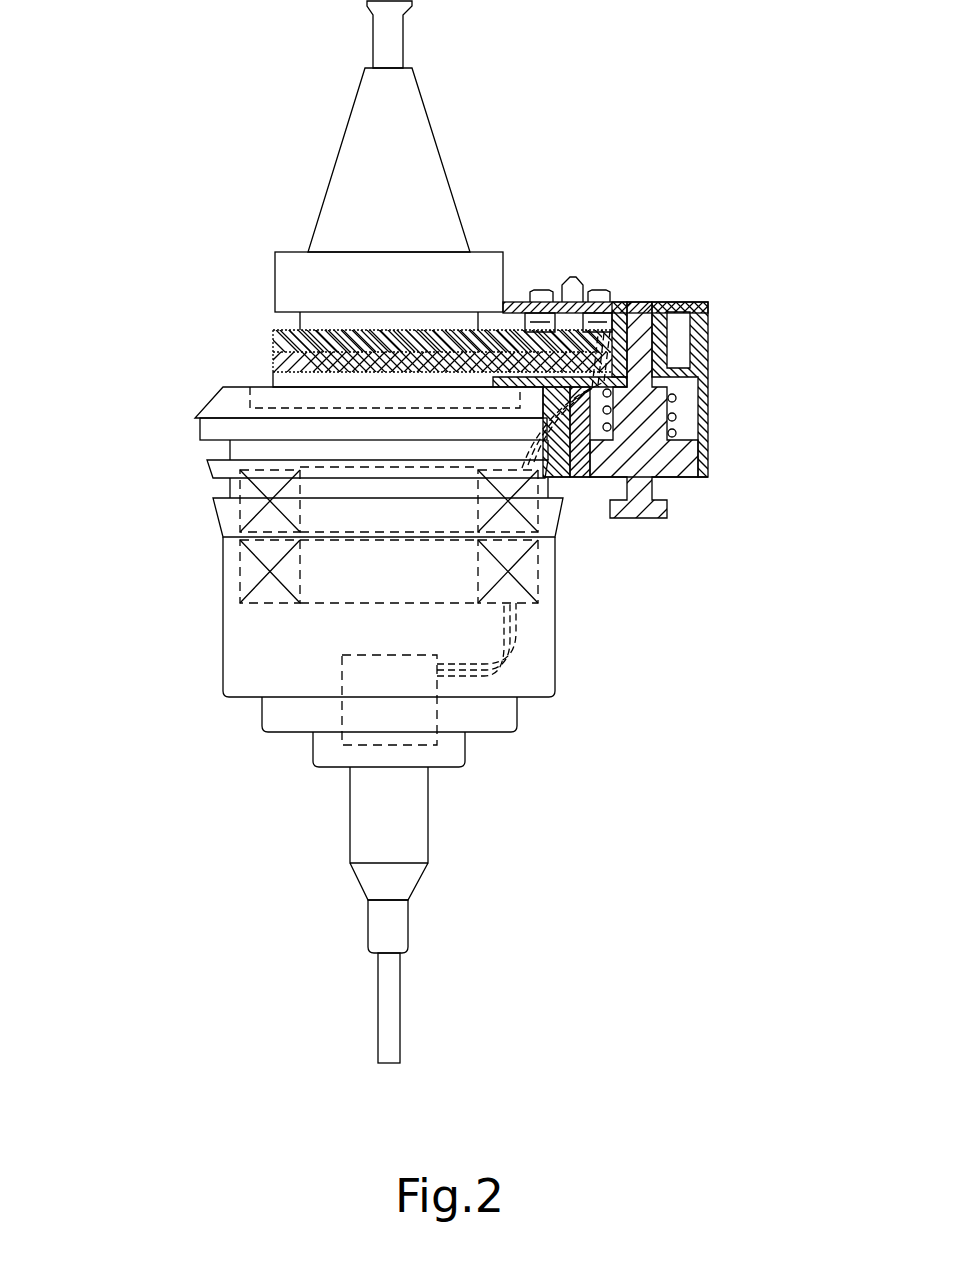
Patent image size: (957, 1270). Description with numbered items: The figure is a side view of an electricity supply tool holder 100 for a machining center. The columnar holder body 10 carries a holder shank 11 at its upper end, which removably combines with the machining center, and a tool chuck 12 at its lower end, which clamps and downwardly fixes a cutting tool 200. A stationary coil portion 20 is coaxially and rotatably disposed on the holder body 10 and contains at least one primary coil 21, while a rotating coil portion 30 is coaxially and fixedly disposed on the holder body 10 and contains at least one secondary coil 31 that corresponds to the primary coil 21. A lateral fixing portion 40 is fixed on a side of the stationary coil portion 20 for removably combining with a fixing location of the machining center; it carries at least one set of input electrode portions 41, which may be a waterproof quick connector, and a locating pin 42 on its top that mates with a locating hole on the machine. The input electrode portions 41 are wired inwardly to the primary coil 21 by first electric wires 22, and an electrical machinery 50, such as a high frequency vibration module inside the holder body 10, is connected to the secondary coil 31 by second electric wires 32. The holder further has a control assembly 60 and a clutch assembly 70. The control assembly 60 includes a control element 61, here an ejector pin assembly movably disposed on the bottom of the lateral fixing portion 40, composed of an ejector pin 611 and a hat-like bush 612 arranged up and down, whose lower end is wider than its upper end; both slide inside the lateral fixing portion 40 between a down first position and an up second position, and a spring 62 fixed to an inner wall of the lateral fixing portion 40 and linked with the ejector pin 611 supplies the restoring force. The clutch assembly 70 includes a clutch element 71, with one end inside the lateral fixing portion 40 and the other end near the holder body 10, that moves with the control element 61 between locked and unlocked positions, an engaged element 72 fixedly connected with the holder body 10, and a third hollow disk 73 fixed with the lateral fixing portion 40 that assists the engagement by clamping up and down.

The electricity supply tool holder 100 is at (682, 79).
The holder body 10 is at (343, 165).
The holder shank 11 is at (330, 178).
The tool chuck 12 is at (378, 920).
The stationary coil portion 20 is at (195, 410).
The primary coil 21 is at (230, 492).
The first electric wires 22 is at (540, 470).
The rotating coil portion 30 is at (363, 683).
The secondary coil 31 is at (240, 572).
The second electric wires 32 is at (540, 672).
The lateral fixing portion 40 is at (590, 351).
The input electrode portions 41 is at (541, 290).
The locating pin 42 is at (572, 280).
The electrical machinery 50 is at (445, 713).
The control assembly 60 is at (599, 390).
The control element 61 is at (599, 370).
The ejector pin 611 is at (636, 305).
The hat-like bush 612 is at (660, 305).
The spring 62 is at (675, 413).
The clutch assembly 70 is at (523, 403).
The clutch element 71 is at (273, 332).
The engaged element 72 is at (273, 353).
The third hollow disk 73 is at (273, 373).
The cutting tool 200 is at (390, 1002).